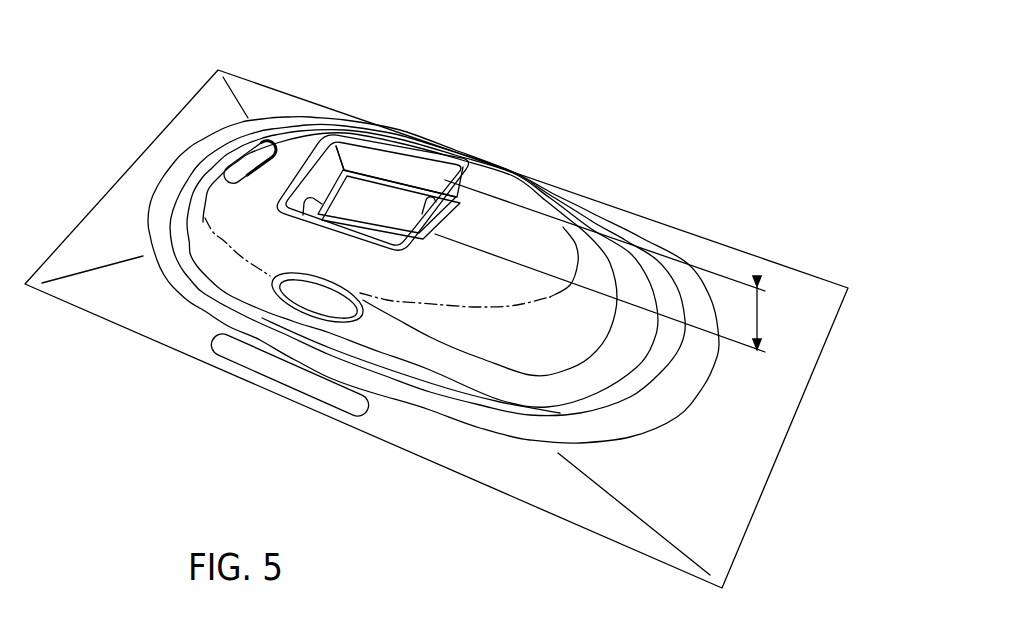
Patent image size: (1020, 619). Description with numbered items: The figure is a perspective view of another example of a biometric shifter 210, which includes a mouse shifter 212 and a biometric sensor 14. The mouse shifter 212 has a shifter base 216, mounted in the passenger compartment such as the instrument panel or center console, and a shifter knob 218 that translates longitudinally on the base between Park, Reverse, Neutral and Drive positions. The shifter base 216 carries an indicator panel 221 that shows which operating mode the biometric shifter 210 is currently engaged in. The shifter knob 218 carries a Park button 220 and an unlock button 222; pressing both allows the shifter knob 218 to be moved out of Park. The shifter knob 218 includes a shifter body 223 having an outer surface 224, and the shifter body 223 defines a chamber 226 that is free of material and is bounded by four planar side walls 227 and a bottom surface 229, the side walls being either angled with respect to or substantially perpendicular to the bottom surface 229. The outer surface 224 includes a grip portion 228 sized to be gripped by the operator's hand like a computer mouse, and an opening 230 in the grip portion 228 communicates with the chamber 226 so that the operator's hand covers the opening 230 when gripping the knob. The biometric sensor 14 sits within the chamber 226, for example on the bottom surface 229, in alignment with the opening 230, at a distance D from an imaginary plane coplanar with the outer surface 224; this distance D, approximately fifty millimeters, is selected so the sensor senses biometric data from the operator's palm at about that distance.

The biometric shifter 210 is at (683, 128).
The mouse shifter 212 is at (190, 132).
The shifter base 216 is at (638, 235).
The shifter knob 218 is at (497, 187).
The Park button 220 is at (248, 158).
The indicator panel 221 is at (233, 363).
The unlock button 222 is at (333, 312).
The shifter body 223 is at (477, 157).
The outer surface 224 is at (213, 217).
The chamber 226 is at (340, 148).
The planar side walls 227 is at (423, 172).
The grip portion 228 is at (255, 250).
The bottom surface 229 is at (433, 200).
The opening 230 is at (303, 203).
The biometric sensor 14 is at (377, 215).
The distance D is at (762, 318).